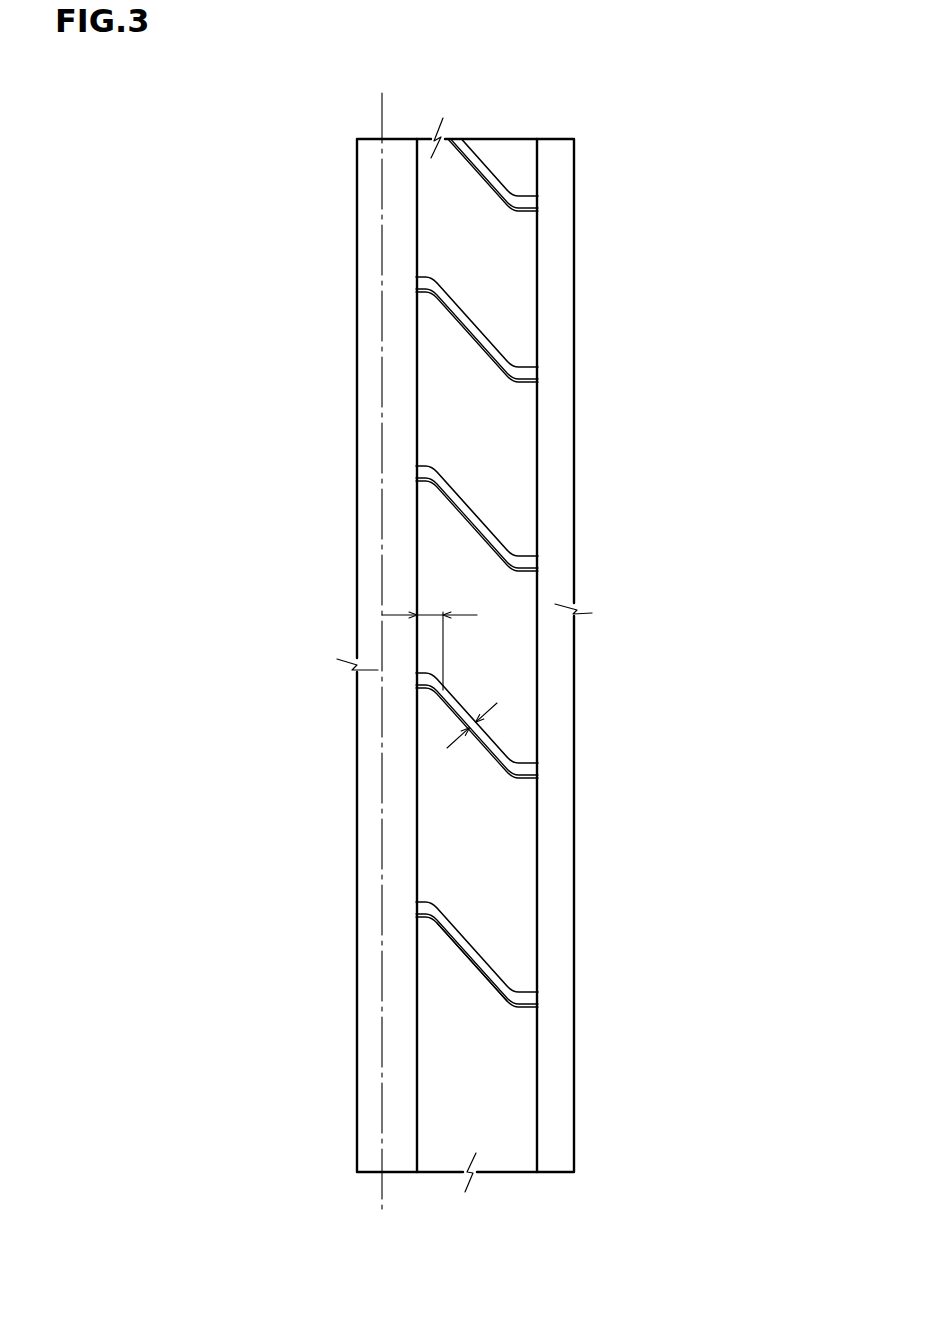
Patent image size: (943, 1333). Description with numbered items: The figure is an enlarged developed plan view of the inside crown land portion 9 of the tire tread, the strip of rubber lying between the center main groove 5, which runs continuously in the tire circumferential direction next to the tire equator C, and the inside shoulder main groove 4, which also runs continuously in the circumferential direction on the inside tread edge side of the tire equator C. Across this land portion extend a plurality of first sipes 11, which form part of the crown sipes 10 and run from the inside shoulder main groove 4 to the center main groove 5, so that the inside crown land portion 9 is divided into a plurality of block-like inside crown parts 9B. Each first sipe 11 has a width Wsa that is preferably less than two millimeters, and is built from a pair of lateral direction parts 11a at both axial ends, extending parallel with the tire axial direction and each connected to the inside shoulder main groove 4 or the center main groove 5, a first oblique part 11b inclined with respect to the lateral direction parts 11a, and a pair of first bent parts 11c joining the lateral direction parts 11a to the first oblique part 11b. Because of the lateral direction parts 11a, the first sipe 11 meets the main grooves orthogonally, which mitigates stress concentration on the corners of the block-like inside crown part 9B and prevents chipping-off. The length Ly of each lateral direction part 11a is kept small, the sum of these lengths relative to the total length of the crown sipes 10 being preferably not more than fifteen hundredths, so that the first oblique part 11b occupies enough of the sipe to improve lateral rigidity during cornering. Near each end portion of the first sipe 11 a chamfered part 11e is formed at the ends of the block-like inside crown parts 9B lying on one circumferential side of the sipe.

The inside shoulder main groove 4 is at (556, 269).
The center main groove 5 is at (368, 167).
The inside crown land portion 9 is at (470, 213).
The block-like inside crown part 9B is at (502, 867).
The crown sipe 10 is at (482, 520).
The first sipe 11 is at (505, 753).
The lateral direction part 11a is at (427, 690).
The first oblique part 11b is at (480, 970).
The first bent part 11c is at (436, 918).
The chamfered part 11e is at (428, 906).
The tire equator C is at (381, 639).
The length of lateral direction part Ly is at (430, 612).
The width of first sipe Wsa is at (490, 731).